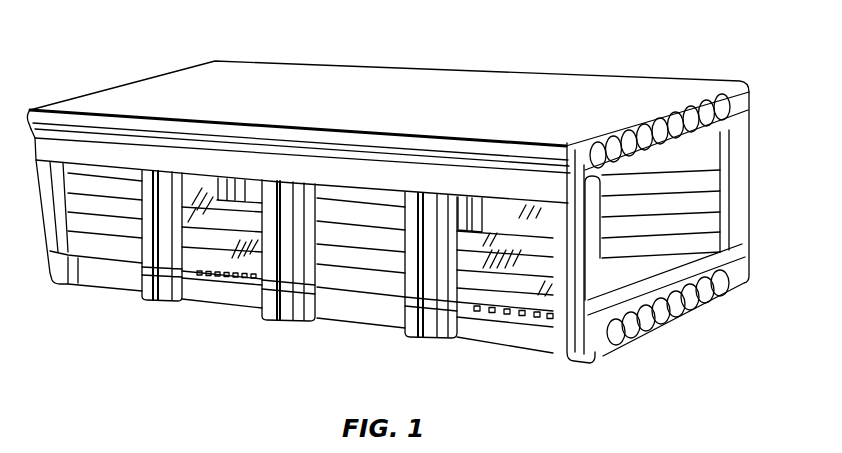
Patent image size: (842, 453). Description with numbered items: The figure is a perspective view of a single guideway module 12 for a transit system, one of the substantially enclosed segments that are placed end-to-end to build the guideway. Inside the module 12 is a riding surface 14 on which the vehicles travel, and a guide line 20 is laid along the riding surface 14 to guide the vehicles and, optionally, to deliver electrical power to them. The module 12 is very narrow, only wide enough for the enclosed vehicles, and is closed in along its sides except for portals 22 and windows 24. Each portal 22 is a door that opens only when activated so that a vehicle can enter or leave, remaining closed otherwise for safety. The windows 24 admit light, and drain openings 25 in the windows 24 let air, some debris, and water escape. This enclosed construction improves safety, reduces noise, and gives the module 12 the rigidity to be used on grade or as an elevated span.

The guideway module 12 is at (418, 98).
The riding surface 14 is at (648, 273).
The guide line 20 is at (680, 278).
The portal 22 is at (114, 229).
The window 24 is at (223, 241).
The drain opening 25 is at (222, 279).